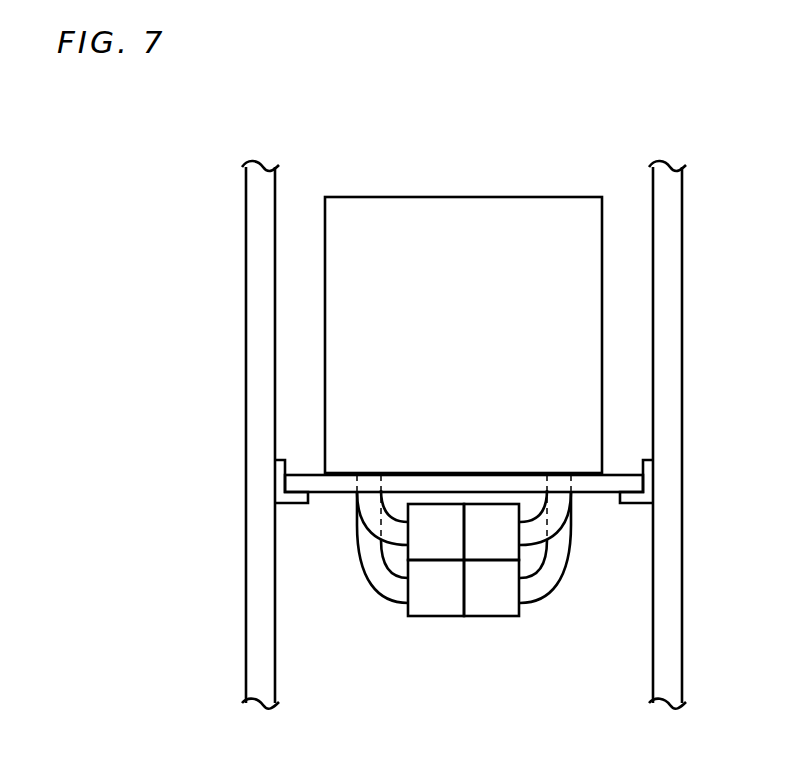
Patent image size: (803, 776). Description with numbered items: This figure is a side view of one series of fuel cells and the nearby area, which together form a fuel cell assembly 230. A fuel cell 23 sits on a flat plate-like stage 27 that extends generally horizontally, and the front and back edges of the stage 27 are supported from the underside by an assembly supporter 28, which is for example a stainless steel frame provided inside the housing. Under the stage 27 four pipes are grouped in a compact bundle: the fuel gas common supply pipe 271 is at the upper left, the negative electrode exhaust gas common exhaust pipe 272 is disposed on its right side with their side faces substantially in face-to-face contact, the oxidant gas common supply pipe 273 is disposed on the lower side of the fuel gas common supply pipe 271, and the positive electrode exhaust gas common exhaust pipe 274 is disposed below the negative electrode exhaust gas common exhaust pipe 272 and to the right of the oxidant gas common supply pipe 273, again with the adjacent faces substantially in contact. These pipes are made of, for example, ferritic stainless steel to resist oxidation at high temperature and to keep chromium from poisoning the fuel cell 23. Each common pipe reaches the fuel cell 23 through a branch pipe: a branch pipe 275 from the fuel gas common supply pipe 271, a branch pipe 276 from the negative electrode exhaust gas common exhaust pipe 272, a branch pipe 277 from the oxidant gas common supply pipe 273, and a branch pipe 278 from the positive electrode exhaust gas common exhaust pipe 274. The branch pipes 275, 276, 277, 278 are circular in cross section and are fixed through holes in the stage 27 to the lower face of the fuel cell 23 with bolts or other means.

The fuel cell assembly 230 is at (417, 168).
The fuel cell 23 is at (362, 313).
The stage 27 is at (317, 482).
The assembly supporter 28 is at (257, 368).
The fuel gas common supply pipe 271 is at (432, 552).
The negative electrode exhaust gas common exhaust pipe 272 is at (478, 603).
The oxidant gas common supply pipe 273 is at (450, 603).
The positive electrode exhaust gas common exhaust pipe 274 is at (488, 552).
The branch pipe 275 is at (388, 547).
The branch pipe 276 is at (547, 547).
The branch pipe 277 is at (380, 577).
The branch pipe 278 is at (548, 575).